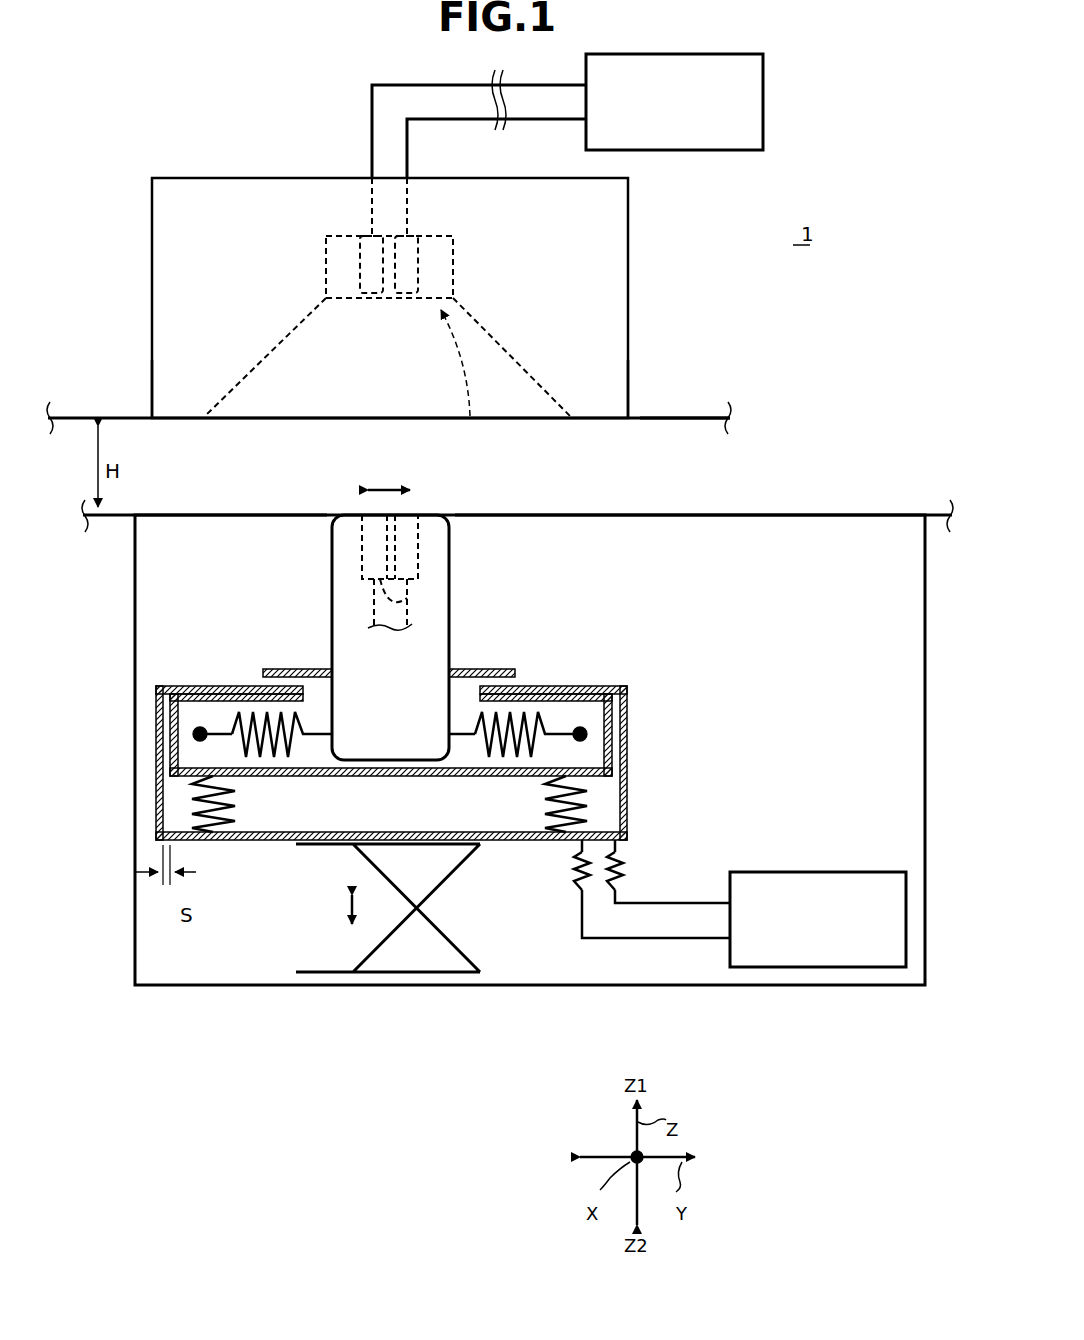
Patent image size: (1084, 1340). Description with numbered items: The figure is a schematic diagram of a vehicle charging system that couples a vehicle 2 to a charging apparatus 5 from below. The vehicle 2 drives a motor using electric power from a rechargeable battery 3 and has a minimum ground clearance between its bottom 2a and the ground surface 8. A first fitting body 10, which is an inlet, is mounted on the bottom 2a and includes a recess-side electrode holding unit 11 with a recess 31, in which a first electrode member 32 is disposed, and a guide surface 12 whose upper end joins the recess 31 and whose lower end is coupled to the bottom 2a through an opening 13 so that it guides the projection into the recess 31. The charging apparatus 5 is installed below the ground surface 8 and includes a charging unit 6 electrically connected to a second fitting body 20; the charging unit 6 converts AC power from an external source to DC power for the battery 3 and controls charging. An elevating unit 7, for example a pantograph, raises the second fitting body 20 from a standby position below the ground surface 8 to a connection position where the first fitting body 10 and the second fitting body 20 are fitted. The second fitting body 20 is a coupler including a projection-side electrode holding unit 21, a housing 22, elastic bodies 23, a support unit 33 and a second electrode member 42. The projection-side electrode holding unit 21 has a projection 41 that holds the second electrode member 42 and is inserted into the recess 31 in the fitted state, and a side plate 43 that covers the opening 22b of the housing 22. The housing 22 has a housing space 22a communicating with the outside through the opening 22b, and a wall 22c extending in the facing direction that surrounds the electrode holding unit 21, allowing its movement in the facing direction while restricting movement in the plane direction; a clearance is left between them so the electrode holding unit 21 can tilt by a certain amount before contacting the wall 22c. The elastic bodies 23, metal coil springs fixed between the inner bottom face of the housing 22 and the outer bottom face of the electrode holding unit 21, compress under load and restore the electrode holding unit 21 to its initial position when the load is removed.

The vehicle 2 is at (74, 424).
The bottom 2a is at (688, 418).
The battery 3 is at (765, 100).
The charging apparatus 5 is at (752, 632).
The charging unit 6 is at (810, 872).
The elevating unit 7 is at (324, 972).
The ground surface 8 is at (934, 513).
The first fitting body 10 is at (242, 444).
The recess-side electrode holding unit 11 is at (602, 398).
The guide surface 12 is at (250, 368).
The opening 13 is at (160, 420).
The second fitting body 20 is at (242, 598).
The projection-side electrode holding unit 21 is at (294, 778).
The housing 22 is at (387, 757).
The housing space 22a is at (506, 810).
The opening 22b is at (471, 690).
The wall 22c is at (158, 755).
The elastic body 23 is at (196, 807).
The recess 31 is at (462, 386).
The first electrode member 32 is at (383, 275).
The support unit 33 is at (194, 732).
The projection 41 is at (332, 632).
The second electrode member 42 is at (405, 598).
The side plate 43 is at (508, 670).